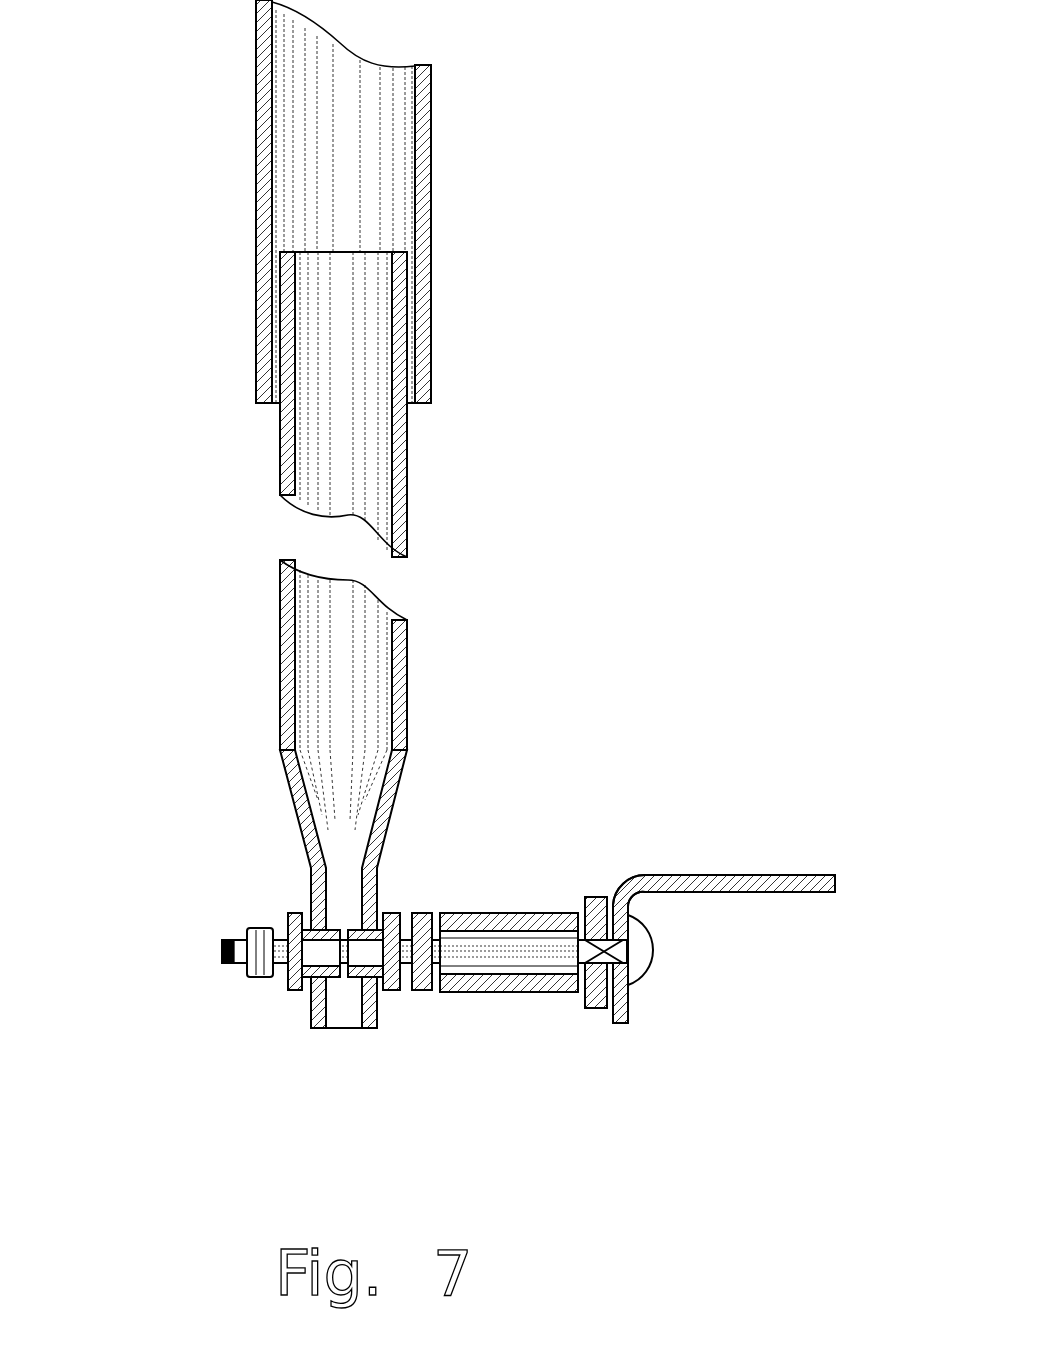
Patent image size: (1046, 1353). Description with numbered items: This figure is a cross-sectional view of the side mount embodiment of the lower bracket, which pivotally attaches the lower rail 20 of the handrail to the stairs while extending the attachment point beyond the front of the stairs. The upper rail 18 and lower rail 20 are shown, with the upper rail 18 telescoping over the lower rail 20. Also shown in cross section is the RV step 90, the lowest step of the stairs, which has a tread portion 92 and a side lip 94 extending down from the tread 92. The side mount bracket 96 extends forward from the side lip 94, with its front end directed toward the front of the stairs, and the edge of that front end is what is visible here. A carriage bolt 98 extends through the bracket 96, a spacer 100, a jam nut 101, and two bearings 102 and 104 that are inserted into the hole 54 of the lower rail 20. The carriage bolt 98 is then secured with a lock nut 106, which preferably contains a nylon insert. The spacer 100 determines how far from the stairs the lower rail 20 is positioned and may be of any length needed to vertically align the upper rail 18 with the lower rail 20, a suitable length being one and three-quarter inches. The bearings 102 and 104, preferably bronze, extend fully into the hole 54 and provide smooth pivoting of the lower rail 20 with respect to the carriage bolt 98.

The upper rail 18 is at (431, 167).
The lower rail 20 is at (280, 668).
The hole 54 is at (327, 898).
The RV step 90 is at (793, 908).
The tread portion 92 is at (743, 873).
The side lip 94 is at (630, 1014).
The side mount bracket 96 is at (597, 897).
The carriage bolt 98 is at (650, 932).
The spacer 100 is at (495, 912).
The jam nut 101 is at (424, 990).
The bearing 102 is at (397, 990).
The bearing 104 is at (295, 990).
The lock nut 106 is at (270, 927).